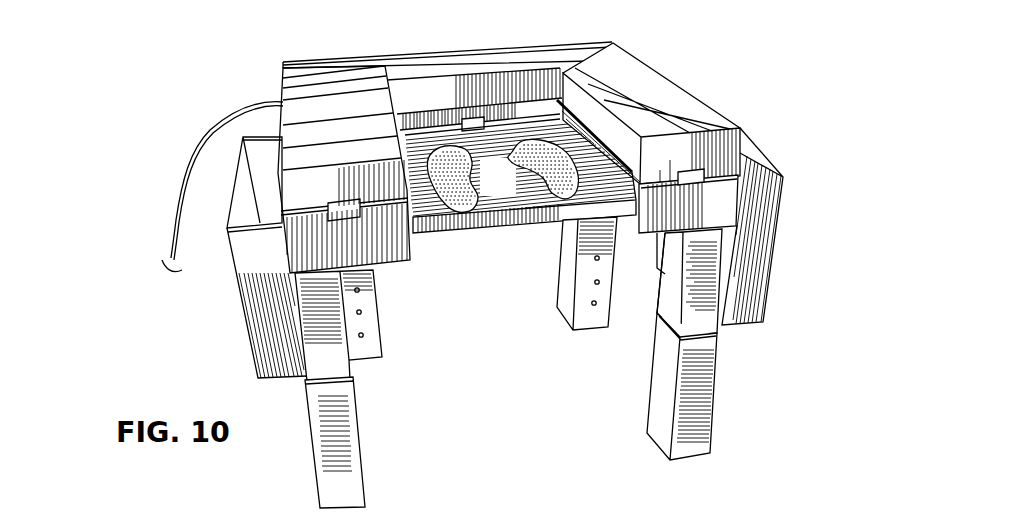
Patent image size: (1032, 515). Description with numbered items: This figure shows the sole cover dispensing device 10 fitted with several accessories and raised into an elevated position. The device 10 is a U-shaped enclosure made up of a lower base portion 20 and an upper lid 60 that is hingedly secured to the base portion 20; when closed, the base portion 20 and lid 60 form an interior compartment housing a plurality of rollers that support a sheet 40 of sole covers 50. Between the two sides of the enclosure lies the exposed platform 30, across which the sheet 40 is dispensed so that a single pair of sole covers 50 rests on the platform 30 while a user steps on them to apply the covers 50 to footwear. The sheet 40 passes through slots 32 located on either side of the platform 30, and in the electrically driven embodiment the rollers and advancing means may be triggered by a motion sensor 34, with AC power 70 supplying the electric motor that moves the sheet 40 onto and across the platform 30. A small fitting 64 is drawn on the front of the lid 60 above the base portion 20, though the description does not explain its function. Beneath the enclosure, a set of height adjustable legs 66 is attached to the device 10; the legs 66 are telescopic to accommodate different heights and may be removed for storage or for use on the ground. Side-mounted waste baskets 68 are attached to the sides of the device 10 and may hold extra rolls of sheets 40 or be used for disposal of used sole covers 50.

The dispensing device 10 is at (139, 164).
The lower base portion 20 is at (720, 210).
The platform 30 is at (518, 230).
The slots 32 is at (579, 146).
The motion sensor 34 is at (470, 117).
The sheet 40 is at (490, 200).
The sole covers 50 is at (563, 190).
The upper lid 60 is at (617, 63).
The clamp 64 is at (718, 172).
The height adjustable legs 66 is at (373, 318).
The side-mounted waste baskets 68 is at (745, 294).
The AC power 70 is at (194, 148).